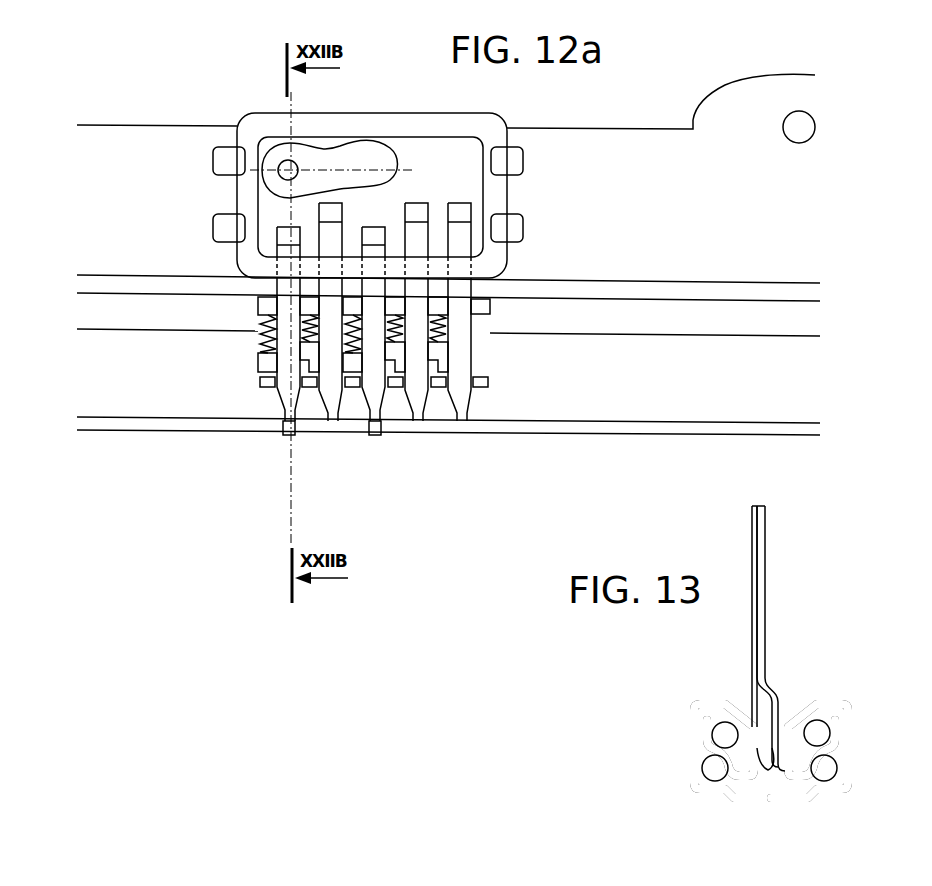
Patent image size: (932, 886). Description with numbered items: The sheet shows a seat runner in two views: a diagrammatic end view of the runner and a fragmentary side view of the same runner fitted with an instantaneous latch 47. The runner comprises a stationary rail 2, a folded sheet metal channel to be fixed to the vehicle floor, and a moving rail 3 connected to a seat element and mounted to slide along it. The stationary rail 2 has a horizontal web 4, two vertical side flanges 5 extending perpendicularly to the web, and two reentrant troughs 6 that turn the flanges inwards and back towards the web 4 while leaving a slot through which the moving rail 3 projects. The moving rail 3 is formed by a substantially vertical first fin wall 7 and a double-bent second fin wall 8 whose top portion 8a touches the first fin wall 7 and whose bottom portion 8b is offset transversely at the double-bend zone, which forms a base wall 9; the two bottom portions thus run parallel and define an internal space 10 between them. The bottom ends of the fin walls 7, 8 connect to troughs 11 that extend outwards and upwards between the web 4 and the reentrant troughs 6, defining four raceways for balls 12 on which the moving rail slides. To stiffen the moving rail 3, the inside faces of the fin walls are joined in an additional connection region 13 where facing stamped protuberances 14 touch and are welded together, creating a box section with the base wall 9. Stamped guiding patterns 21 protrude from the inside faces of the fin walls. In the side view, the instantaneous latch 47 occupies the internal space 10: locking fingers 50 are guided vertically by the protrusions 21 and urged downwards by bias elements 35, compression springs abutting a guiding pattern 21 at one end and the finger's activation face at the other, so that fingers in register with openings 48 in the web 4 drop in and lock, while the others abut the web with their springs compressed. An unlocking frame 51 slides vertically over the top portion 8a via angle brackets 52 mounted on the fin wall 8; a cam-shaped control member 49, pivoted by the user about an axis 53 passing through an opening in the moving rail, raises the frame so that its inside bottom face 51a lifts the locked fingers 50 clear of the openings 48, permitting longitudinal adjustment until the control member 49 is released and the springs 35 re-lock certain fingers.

In FIG. 13, the stationary rail 2 is at (765, 783).
In FIG. 12a, the moving rail 3 is at (728, 97).
In FIG. 13, the moving rail 3 is at (762, 695).
In FIG. 13, the horizontal web 4 is at (735, 801).
In FIG. 13, the vertical side flanges 5 is at (690, 755).
In FIG. 13, the reentrant troughs 6 is at (707, 702).
In FIG. 13, the first fin wall 7 is at (752, 537).
In FIG. 13, the second fin wall 8 is at (766, 556).
In FIG. 13, the top portion of second fin wall 8a is at (767, 612).
In FIG. 13, the bottom portion of second fin wall 8b is at (783, 698).
In FIG. 13, the base wall 9 is at (771, 682).
In FIG. 13, the internal space 10 is at (757, 693).
In FIG. 13, the troughs 11 is at (822, 739).
In FIG. 13, the balls 12 is at (815, 732).
In FIG. 13, the additional connection region 13 is at (769, 772).
In FIG. 13, the protuberance 14 is at (766, 757).
In FIG. 12a, the guiding patterns 21 is at (260, 303).
In FIG. 12a, the bias element 35 is at (262, 334).
In FIG. 12a, the instantaneous latch 47 is at (379, 368).
In FIG. 12a, the openings 48 is at (368, 427).
In FIG. 12a, the control member 49 is at (402, 160).
In FIG. 12a, the locking fingers 50 is at (285, 408).
In FIG. 12a, the unlocking frame 51 is at (381, 125).
In FIG. 12a, the inside bottom face 51a is at (396, 257).
In FIG. 12a, the angle brackets 52 is at (222, 165).
In FIG. 12a, the axis 53 is at (284, 166).